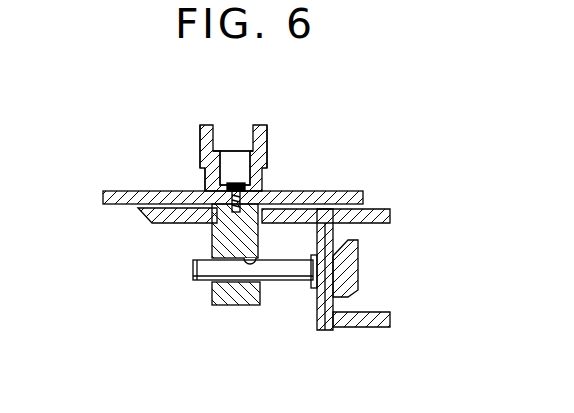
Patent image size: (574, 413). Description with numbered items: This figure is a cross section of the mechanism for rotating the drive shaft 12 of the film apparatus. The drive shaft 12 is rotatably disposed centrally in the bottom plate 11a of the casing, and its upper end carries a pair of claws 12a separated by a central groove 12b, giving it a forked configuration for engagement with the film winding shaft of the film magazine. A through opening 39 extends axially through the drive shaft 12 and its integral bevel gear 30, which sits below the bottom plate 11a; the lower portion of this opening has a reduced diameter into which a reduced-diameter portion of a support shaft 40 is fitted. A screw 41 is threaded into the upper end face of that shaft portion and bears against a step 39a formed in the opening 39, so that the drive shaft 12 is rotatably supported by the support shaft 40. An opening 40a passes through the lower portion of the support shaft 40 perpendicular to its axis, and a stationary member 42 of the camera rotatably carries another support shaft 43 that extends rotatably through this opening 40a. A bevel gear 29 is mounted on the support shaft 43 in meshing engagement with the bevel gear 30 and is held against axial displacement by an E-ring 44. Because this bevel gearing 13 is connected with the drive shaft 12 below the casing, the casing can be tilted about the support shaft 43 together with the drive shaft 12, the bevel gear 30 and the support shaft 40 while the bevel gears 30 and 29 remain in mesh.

The bottom plate 11a is at (118, 191).
The drive shaft 12 is at (258, 177).
The claws 12a is at (208, 124).
The central groove 12b is at (243, 150).
The through opening 39 is at (240, 160).
The step 39a is at (208, 190).
The screw 41 is at (255, 187).
The stationary member 42 is at (380, 211).
The bevel gear 29 is at (320, 318).
The bevel gear 30 is at (187, 213).
The support shaft 40 is at (212, 240).
The opening 40a is at (253, 262).
The bevel gearing 13 is at (186, 277).
The support shaft 43 is at (205, 278).
The E-ring 44 is at (312, 287).